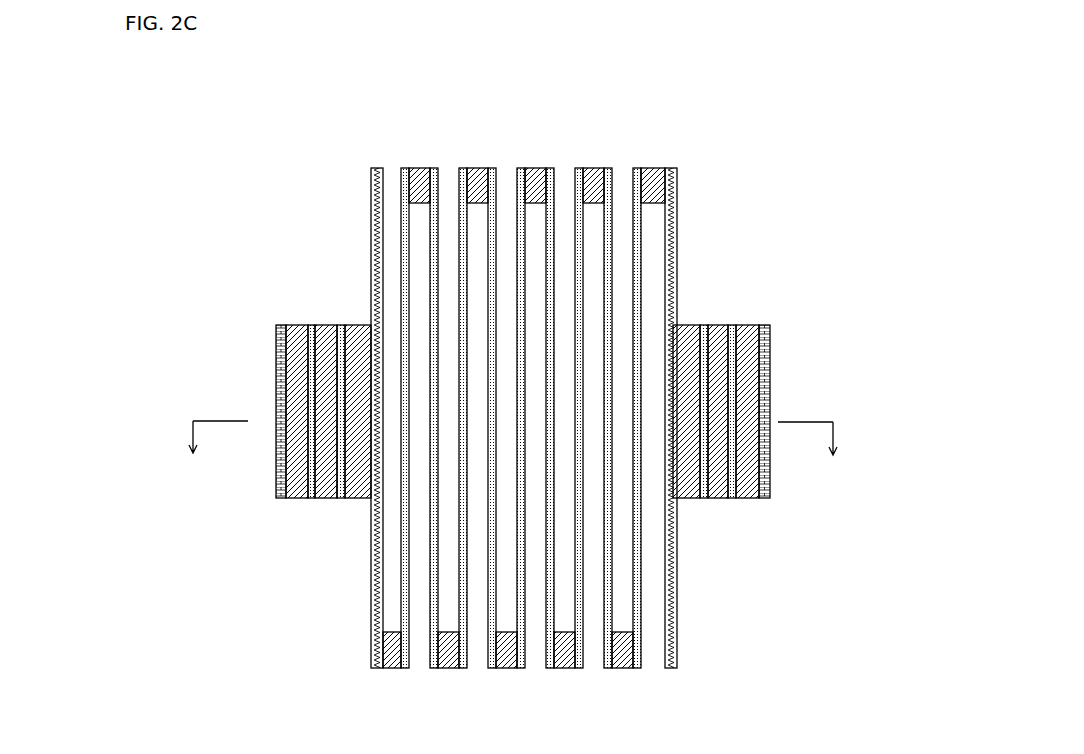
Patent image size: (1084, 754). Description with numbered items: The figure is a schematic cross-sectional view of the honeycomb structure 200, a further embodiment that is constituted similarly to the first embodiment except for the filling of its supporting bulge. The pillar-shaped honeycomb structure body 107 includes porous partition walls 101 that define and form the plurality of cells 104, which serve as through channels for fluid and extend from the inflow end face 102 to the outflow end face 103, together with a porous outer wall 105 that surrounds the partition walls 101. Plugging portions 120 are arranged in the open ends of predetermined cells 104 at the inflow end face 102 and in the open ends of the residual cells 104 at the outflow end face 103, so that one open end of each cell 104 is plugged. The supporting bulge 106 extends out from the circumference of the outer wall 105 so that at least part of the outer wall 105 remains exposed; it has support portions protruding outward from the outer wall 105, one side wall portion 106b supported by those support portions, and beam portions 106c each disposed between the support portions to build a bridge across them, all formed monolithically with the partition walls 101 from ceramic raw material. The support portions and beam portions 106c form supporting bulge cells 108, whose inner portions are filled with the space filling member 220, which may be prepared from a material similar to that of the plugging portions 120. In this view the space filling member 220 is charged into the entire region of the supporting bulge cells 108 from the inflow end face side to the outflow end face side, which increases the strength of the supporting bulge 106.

The honeycomb structure 200 is at (530, 391).
The partition walls 101 is at (577, 210).
The inflow end face 102 is at (384, 155).
The outflow end face 103 is at (371, 673).
The cells 104 is at (620, 197).
The outer wall 105 is at (675, 225).
The supporting bulge 106 is at (485, 399).
The side wall portion 106b is at (770, 353).
The beam portions 106c is at (733, 327).
The honeycomb structure body 107 is at (372, 235).
The supporting bulge cells 108 is at (327, 327).
The plugging portions 120 is at (475, 167).
The space filling member 220 is at (297, 483).